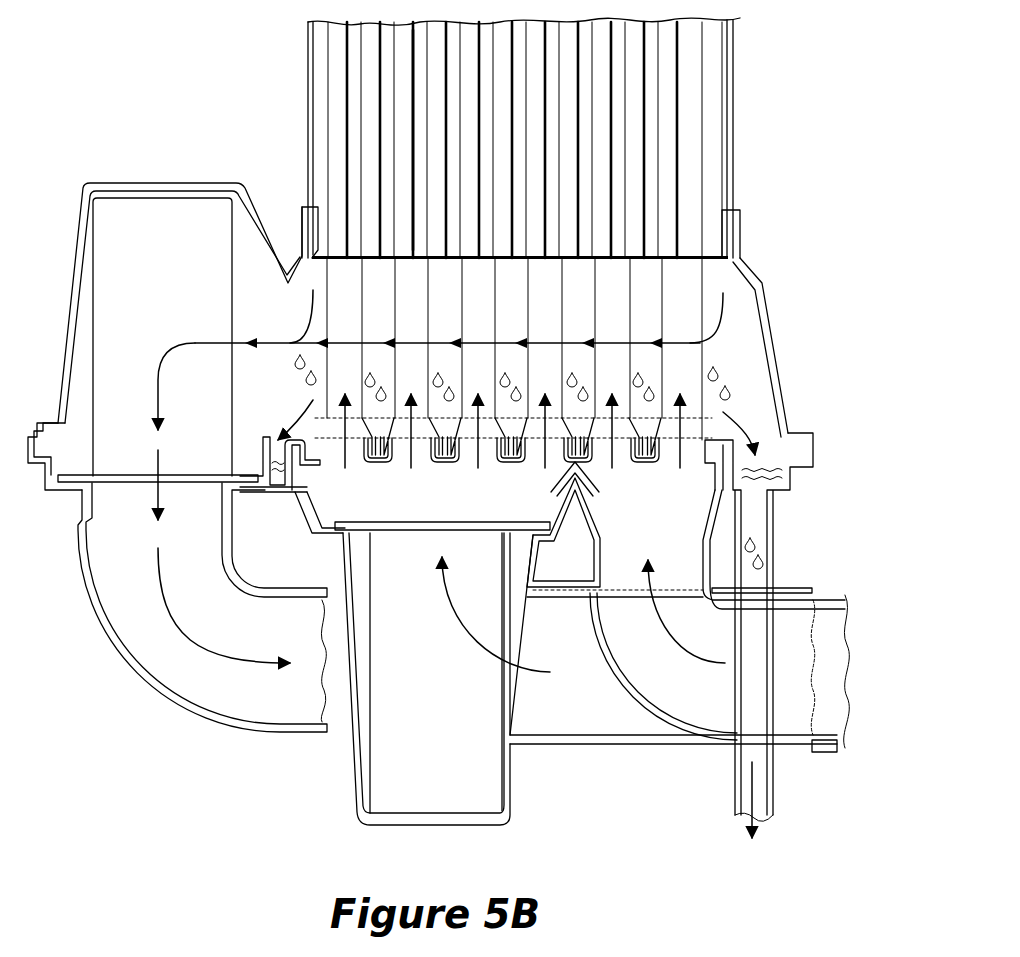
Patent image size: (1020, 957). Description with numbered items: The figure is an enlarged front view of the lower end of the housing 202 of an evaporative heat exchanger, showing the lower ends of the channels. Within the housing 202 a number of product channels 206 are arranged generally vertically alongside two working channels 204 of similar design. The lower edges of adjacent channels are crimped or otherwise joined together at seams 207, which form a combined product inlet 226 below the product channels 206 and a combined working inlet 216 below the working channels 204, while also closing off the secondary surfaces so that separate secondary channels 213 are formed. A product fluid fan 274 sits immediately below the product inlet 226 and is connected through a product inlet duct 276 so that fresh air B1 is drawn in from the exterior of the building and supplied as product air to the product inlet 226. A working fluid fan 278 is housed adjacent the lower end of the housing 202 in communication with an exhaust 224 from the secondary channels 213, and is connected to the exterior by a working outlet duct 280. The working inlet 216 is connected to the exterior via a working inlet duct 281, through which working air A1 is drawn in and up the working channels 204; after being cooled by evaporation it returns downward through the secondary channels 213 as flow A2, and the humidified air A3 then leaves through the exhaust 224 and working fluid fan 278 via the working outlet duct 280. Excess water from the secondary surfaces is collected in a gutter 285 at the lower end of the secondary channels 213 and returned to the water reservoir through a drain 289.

The housing 202 is at (740, 95).
The working channels 204 is at (690, 197).
The product channels 206 is at (368, 157).
The secondary channels 213 is at (403, 92).
The seams 207 is at (372, 463).
The combined working inlet 216 is at (686, 535).
The exhaust 224 is at (252, 277).
The combined product inlet 226 is at (513, 394).
The product fluid fan 274 is at (400, 790).
The product inlet duct 276 is at (540, 717).
The working fluid fan 278 is at (113, 258).
The working outlet duct 280 is at (232, 693).
The working inlet duct 281 is at (703, 703).
The gutter 285 is at (785, 490).
The drain 289 is at (777, 777).
The working air A1 is at (686, 621).
The working air flow A2 is at (710, 345).
The humidified air A3 is at (170, 614).
The fresh air B1 is at (495, 619).